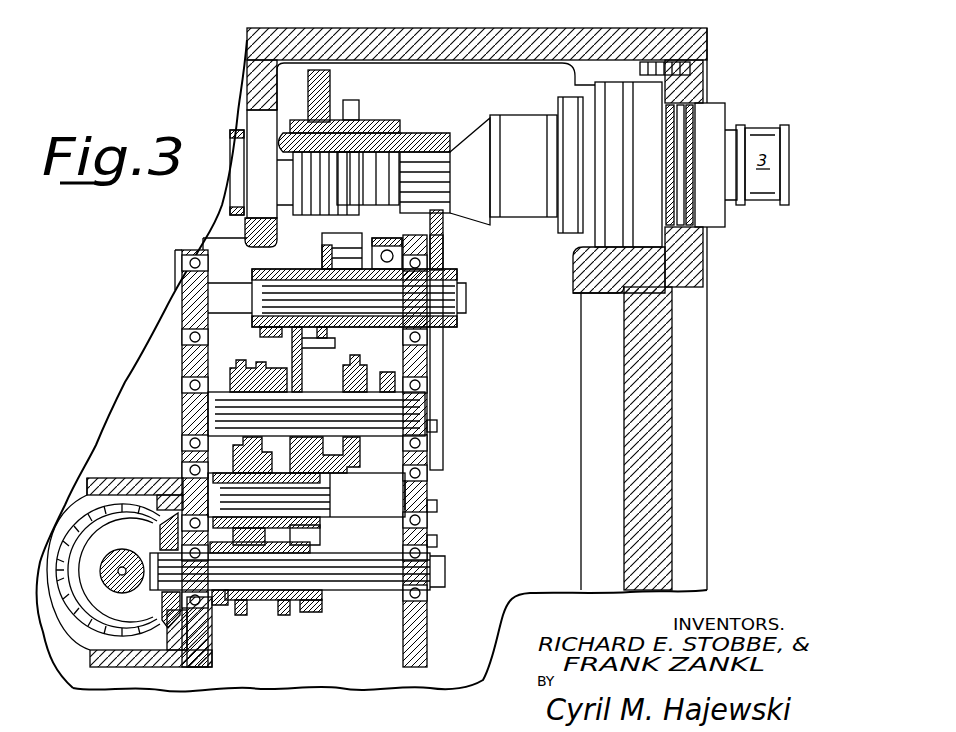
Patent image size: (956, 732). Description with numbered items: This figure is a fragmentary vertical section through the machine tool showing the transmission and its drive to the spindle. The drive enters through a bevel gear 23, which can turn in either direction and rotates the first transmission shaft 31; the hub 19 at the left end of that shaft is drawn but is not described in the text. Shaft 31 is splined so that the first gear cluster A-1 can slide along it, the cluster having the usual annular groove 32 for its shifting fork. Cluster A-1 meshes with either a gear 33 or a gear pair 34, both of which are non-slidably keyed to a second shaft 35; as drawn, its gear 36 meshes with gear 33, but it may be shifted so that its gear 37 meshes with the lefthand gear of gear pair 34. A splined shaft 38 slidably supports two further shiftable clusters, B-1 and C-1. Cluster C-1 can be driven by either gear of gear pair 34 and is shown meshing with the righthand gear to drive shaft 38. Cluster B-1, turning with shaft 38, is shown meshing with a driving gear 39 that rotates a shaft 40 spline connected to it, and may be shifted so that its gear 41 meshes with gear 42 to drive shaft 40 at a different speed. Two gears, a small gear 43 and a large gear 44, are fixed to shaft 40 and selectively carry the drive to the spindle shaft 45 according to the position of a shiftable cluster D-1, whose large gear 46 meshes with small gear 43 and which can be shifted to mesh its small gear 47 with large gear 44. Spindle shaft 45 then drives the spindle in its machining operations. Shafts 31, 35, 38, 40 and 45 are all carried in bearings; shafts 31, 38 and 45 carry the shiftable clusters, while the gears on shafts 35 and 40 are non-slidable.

The drive shaft hub 19 is at (122, 556).
The bevel gear 23 is at (163, 605).
The first transmission shaft 31 is at (397, 582).
The annular groove 32 is at (318, 604).
The gear 33 is at (320, 530).
The gear pair 34 is at (212, 470).
The shaft 35 is at (400, 506).
The gear 36 is at (292, 612).
The gear 37 is at (226, 605).
The splined shaft 38 is at (425, 416).
The driving gear 39 is at (300, 345).
The shaft 40 is at (467, 300).
The gear 41 is at (366, 380).
The gear 42 is at (378, 265).
The small gear 43 is at (345, 268).
The large gear 44 is at (443, 238).
The spindle shaft 45 is at (402, 140).
The large gear 46 is at (322, 92).
The small gear 47 is at (380, 124).
The first gear cluster A-1 is at (262, 608).
The gear cluster B-1 is at (362, 394).
The gear cluster C-1 is at (268, 375).
The gear cluster D-1 is at (377, 97).